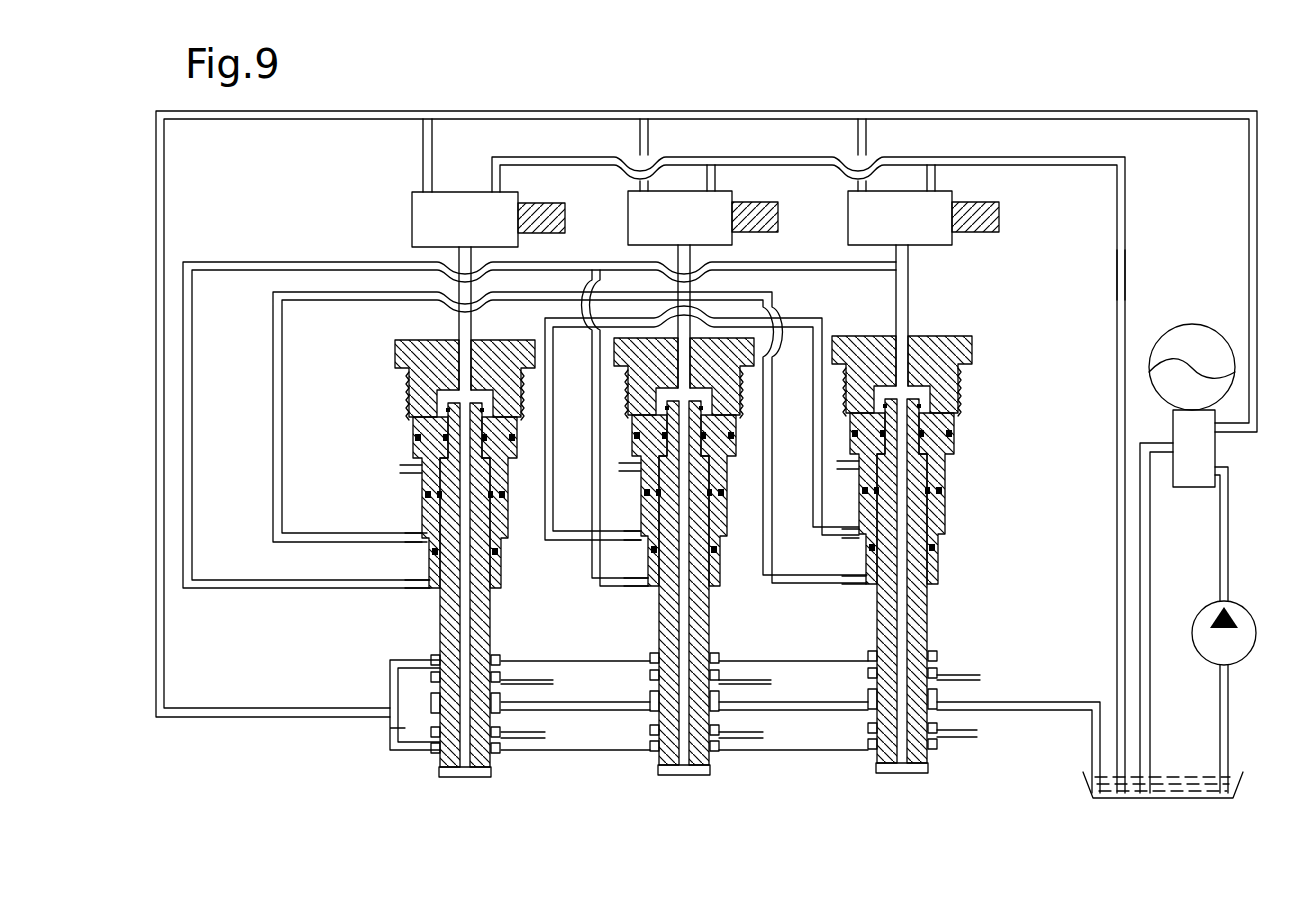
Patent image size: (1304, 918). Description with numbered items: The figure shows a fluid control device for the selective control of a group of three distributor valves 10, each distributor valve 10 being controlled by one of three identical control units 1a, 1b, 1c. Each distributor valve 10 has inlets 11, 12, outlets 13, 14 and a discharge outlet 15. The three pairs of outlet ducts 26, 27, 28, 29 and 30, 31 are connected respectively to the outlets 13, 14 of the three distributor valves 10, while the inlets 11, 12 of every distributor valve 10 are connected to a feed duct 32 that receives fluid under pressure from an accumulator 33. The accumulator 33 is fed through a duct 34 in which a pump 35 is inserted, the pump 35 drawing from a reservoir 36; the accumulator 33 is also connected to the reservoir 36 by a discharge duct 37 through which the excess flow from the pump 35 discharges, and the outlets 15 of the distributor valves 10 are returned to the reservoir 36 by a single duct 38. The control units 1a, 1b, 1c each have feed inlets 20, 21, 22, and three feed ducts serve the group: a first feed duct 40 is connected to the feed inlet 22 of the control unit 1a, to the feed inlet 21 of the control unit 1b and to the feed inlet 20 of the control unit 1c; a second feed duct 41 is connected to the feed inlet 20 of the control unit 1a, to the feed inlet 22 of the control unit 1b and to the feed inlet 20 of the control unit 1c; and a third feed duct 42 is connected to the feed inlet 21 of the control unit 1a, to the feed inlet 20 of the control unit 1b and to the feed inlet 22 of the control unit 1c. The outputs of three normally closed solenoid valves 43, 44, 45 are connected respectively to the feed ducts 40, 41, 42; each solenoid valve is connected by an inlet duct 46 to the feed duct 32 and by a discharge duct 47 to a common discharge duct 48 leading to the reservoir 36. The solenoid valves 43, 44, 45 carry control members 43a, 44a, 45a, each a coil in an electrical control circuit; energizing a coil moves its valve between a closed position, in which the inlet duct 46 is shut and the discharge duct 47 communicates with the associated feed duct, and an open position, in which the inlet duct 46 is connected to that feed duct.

The control unit 1a is at (385, 452).
The control unit 1b is at (634, 490).
The control unit 1c is at (963, 462).
The distributor valve 10 is at (444, 772).
The inlet 11 is at (432, 660).
The inlet 12 is at (392, 735).
The outlet 13 is at (493, 678).
The outlet 14 is at (493, 772).
The outlet 15 is at (432, 702).
The feed inlet 20 is at (425, 532).
The feed inlet 21 is at (420, 584).
The feed inlet 22 is at (470, 372).
The outlet duct 26 is at (528, 684).
The outlet duct 27 is at (520, 740).
The outlet duct 28 is at (748, 684).
The outlet duct 29 is at (740, 740).
The outlet duct 30 is at (972, 678).
The outlet duct 31 is at (975, 738).
The feed duct 32 is at (1252, 236).
The accumulator 33 is at (1205, 448).
The duct 34 is at (1228, 540).
The pump 35 is at (1246, 640).
The reservoir 36 is at (1168, 775).
The discharge duct 37 is at (1142, 540).
The duct 38 is at (1050, 706).
The first feed duct 40 is at (462, 258).
The second feed duct 41 is at (682, 270).
The third feed duct 42 is at (893, 253).
The solenoid valve 43 is at (423, 210).
The control member 43a is at (542, 205).
The solenoid valve 44 is at (636, 210).
The control member 44a is at (772, 232).
The solenoid valve 45 is at (856, 215).
The control member 45a is at (990, 235).
The inlet duct 46 is at (423, 160).
The discharge duct 47 is at (492, 170).
The discharge duct 48 is at (1122, 268).